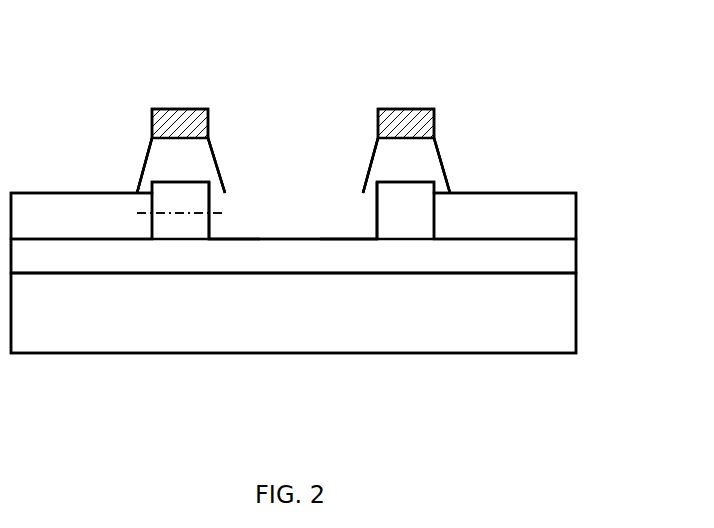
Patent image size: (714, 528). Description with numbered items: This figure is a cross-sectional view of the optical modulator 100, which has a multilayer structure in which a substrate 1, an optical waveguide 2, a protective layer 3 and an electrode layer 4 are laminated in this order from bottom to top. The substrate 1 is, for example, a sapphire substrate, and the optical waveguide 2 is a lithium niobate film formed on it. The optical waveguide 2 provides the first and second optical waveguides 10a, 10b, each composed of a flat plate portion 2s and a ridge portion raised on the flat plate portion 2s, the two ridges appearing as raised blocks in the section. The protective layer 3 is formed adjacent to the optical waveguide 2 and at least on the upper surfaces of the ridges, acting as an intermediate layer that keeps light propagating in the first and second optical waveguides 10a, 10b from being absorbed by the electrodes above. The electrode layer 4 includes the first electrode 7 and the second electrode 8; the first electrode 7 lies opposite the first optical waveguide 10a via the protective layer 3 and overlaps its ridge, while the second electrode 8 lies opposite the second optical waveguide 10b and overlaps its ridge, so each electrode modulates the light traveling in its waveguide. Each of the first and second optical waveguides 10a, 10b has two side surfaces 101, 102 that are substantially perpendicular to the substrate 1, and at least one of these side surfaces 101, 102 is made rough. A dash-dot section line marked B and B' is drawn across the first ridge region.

The optical modulator 100 is at (574, 46).
The substrate 1 is at (577, 293).
The optical waveguide 2 is at (577, 260).
The flat plate portion 2s is at (288, 257).
The protective layer 3 is at (577, 217).
The first optical waveguide 10a is at (180, 210).
The second optical waveguide 10b is at (405, 210).
The first electrode 7 is at (210, 137).
The second electrode 8 is at (436, 137).
The side surface 101 is at (137, 193).
The side surface 102 is at (222, 190).
The electrode layer 4 is at (519, 125).
The section line B is at (168, 215).
The section line B' is at (194, 215).